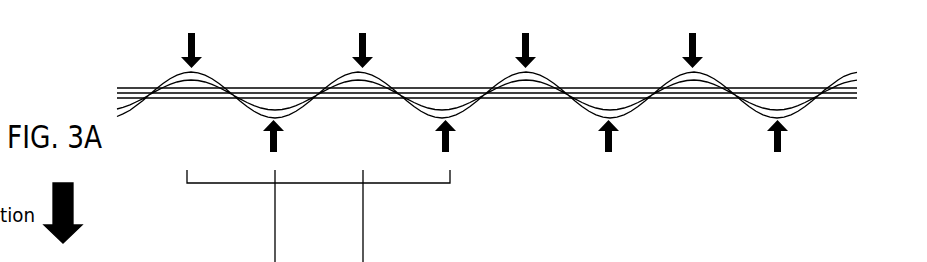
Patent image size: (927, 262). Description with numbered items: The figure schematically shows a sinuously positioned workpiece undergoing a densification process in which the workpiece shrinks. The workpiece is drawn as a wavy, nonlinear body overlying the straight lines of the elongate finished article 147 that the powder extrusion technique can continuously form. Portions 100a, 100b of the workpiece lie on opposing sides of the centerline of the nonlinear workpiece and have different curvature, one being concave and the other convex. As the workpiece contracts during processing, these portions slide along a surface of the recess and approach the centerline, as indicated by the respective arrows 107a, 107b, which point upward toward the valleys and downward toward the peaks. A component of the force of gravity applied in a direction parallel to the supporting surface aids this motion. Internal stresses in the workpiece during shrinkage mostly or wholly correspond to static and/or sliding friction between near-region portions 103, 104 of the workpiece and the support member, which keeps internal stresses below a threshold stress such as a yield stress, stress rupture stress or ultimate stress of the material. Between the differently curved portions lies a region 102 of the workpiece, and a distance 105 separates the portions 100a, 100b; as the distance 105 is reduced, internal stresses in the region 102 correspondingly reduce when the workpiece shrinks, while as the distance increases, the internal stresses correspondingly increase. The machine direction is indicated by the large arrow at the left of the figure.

The portion of the workpiece 100a is at (437, 120).
The portion of the workpiece 100b is at (374, 71).
The arrow 107a is at (269, 138).
The arrow 107b is at (362, 33).
The elongate finished article 147 is at (773, 88).
The region of the workpiece 102 is at (318, 183).
The near-region portion 103 is at (230, 183).
The near-region portion 104 is at (405, 183).
The distance 105 is at (355, 251).